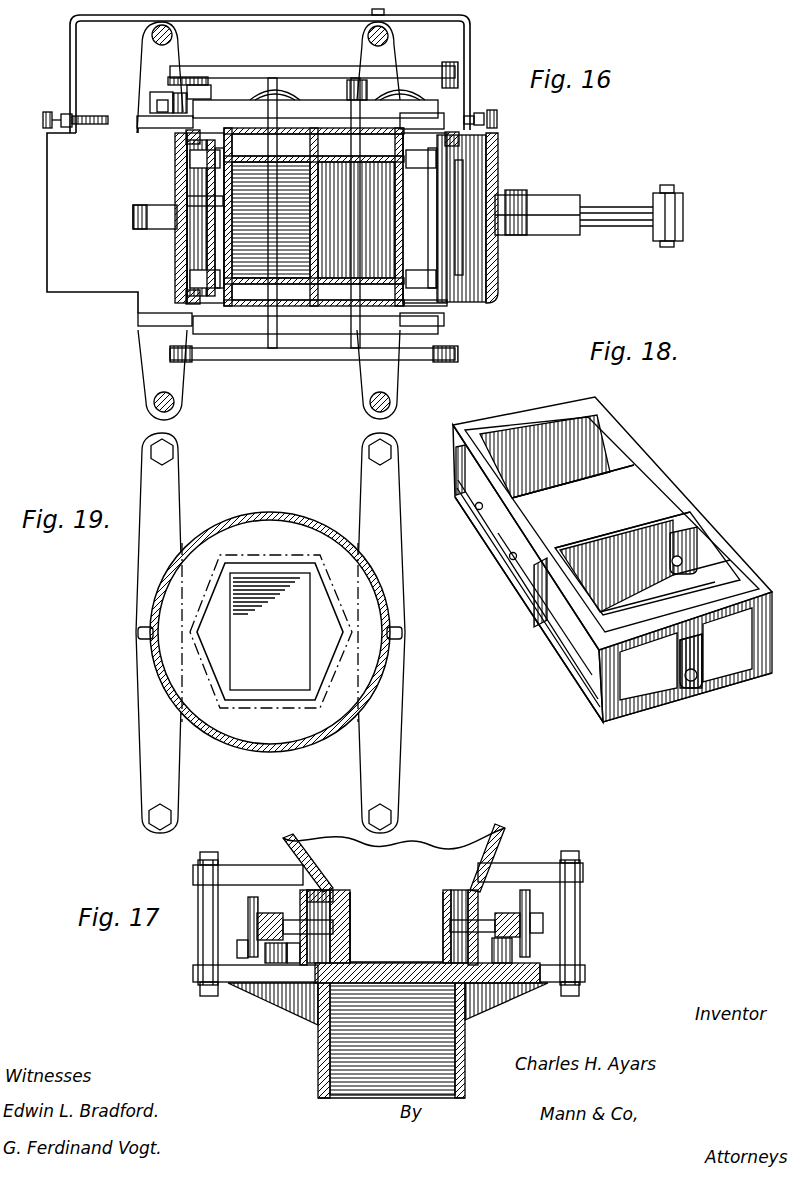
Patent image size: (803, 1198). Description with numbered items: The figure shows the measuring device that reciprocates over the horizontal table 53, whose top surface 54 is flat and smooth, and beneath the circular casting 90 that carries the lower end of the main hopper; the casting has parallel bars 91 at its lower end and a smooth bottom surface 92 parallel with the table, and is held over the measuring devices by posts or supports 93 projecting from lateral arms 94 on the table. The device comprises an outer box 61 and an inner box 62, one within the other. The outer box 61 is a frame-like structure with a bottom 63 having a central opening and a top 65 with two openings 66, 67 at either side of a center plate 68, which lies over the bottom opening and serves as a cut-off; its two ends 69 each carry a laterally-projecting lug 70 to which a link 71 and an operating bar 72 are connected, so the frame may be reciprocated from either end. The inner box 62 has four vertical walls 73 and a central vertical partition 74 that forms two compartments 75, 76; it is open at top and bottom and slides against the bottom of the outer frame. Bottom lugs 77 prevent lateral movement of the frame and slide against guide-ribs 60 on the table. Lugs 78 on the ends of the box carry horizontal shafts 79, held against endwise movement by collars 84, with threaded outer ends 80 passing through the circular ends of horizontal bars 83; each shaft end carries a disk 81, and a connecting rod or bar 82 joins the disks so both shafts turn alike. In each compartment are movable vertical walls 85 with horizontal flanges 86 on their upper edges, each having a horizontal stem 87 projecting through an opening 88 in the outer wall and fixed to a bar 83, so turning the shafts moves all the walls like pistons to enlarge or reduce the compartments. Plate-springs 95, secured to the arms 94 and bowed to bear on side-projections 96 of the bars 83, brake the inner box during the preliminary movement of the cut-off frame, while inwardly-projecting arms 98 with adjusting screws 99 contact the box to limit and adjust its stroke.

In FIG. 17, the horizontal table 53 is at (391, 1040).
In FIG. 17, the top surface of table 54 is at (473, 1013).
In FIG. 16, the guide-ribs 60 is at (139, 118).
In FIG. 17, the guide-ribs 60 is at (277, 963).
In FIG. 16, the outer box 61 is at (458, 304).
In FIG. 18, the outer box 61 is at (609, 722).
In FIG. 16, the inner box 62 is at (207, 238).
In FIG. 18, the inner box 62 is at (528, 583).
In FIG. 17, the inner box 62 is at (301, 897).
In FIG. 16, the bottom of outer box 63 is at (458, 157).
In FIG. 18, the bottom of outer box 63 is at (572, 650).
In FIG. 17, the bottom of outer box 63 is at (400, 962).
In FIG. 18, the top of outer box 65 is at (607, 403).
In FIG. 18, the top opening 66 is at (721, 577).
In FIG. 18, the top opening 67 is at (617, 457).
In FIG. 18, the center plate 68 is at (601, 506).
In FIG. 16, the ends of frame 69 is at (178, 152).
In FIG. 18, the ends of frame 69 is at (760, 673).
In FIG. 16, the lug 70 is at (133, 216).
In FIG. 18, the lug 70 is at (698, 690).
In FIG. 16, the link 71 is at (566, 208).
In FIG. 16, the operating bar 72 is at (684, 232).
In FIG. 16, the vertical walls 73 is at (300, 128).
In FIG. 18, the vertical walls 73 is at (545, 447).
In FIG. 16, the central vertical partition 74 is at (300, 334).
In FIG. 17, the central vertical partition 74 is at (396, 927).
In FIG. 16, the compartment 75 is at (463, 250).
In FIG. 16, the compartment 76 is at (200, 200).
In FIG. 16, the bottom lugs 77 is at (287, 320).
In FIG. 18, the bottom lugs 77 is at (708, 570).
In FIG. 17, the bottom lugs 77 is at (295, 964).
In FIG. 16, the lugs 78 is at (190, 280).
In FIG. 18, the lugs 78 is at (677, 548).
In FIG. 16, the horizontal shafts 79 is at (215, 228).
In FIG. 16, the threaded outer ends 80 is at (186, 137).
In FIG. 16, the circular plate or disk 81 is at (458, 76).
In FIG. 17, the circular plate or disk 81 is at (544, 916).
In FIG. 16, the connecting rod or bar 82 is at (422, 66).
In FIG. 16, the horizontal bars 83 is at (240, 100).
In FIG. 16, the collars 84 is at (445, 168).
In FIG. 16, the movable vertical walls 85 is at (313, 220).
In FIG. 17, the movable vertical walls 85 is at (338, 904).
In FIG. 17, the horizontal flanges 86 is at (320, 892).
In FIG. 16, the horizontal stem 87 is at (275, 118).
In FIG. 18, the opening 88 is at (516, 556).
In FIG. 19, the circular casting 90 is at (303, 738).
In FIG. 17, the circular casting 90 is at (440, 840).
In FIG. 19, the parallel bars 91 is at (165, 505).
In FIG. 17, the parallel bars 91 is at (232, 866).
In FIG. 17, the bottom surface of casting 92 is at (364, 927).
In FIG. 16, the posts or supports 93 is at (152, 36).
In FIG. 19, the posts or supports 93 is at (376, 453).
In FIG. 17, the posts or supports 93 is at (205, 938).
In FIG. 16, the lateral arms 94 is at (165, 60).
In FIG. 17, the lateral arms 94 is at (200, 976).
In FIG. 16, the plate-springs 95 is at (151, 98).
In FIG. 17, the plate-springs 95 is at (250, 958).
In FIG. 16, the side-projections 96 is at (352, 80).
In FIG. 17, the side-projections 96 is at (268, 913).
In FIG. 16, the inwardly-projecting arms 98 is at (70, 57).
In FIG. 16, the adjusting screws 99 is at (45, 118).